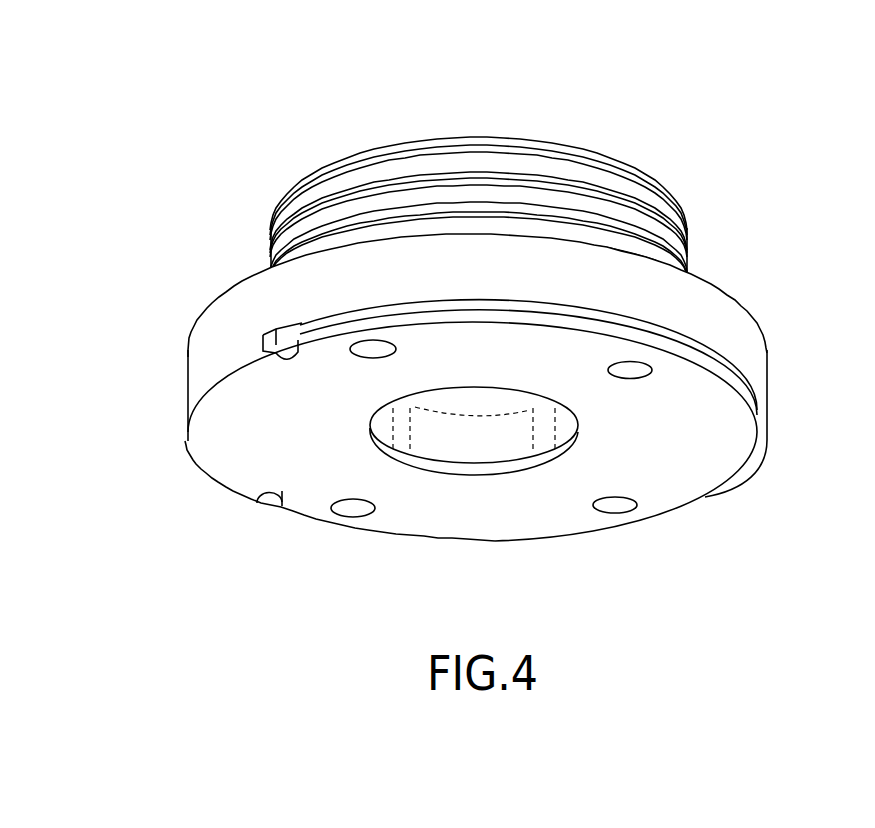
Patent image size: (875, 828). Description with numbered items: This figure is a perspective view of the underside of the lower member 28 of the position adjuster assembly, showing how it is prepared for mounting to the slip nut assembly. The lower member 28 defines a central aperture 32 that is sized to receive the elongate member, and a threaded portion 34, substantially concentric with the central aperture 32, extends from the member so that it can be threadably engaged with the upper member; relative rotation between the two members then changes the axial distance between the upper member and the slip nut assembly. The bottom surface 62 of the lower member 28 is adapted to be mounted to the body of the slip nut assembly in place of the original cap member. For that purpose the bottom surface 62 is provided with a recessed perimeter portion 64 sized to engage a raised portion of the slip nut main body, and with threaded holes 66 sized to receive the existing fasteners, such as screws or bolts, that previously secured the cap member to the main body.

The lower member 28 is at (184, 114).
The threaded portion 34 is at (687, 237).
The bottom surface 62 is at (692, 481).
The recessed perimeter portion 64 is at (748, 401).
The central aperture 32 is at (575, 425).
The threaded holes 66 is at (610, 367).